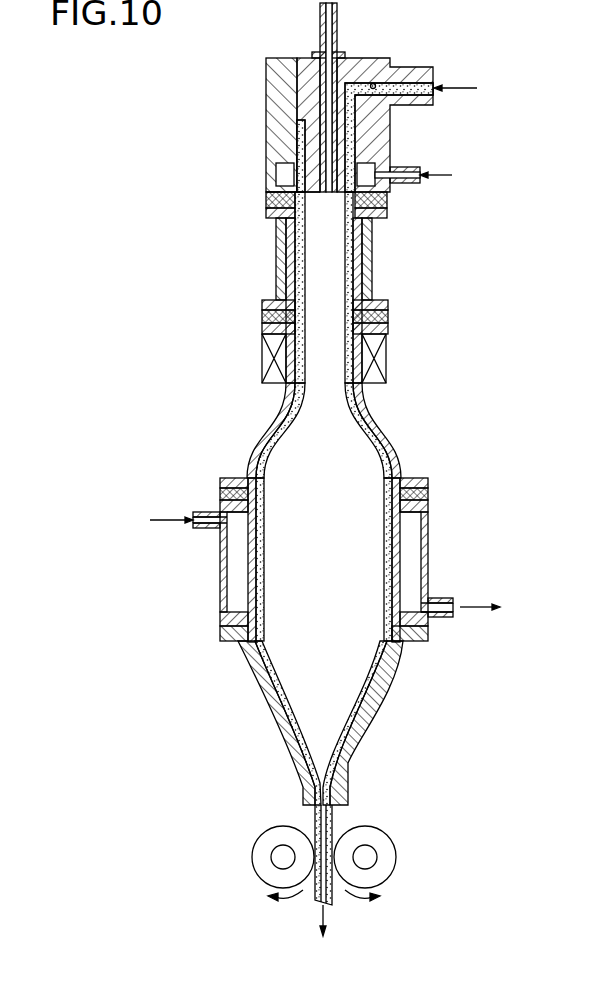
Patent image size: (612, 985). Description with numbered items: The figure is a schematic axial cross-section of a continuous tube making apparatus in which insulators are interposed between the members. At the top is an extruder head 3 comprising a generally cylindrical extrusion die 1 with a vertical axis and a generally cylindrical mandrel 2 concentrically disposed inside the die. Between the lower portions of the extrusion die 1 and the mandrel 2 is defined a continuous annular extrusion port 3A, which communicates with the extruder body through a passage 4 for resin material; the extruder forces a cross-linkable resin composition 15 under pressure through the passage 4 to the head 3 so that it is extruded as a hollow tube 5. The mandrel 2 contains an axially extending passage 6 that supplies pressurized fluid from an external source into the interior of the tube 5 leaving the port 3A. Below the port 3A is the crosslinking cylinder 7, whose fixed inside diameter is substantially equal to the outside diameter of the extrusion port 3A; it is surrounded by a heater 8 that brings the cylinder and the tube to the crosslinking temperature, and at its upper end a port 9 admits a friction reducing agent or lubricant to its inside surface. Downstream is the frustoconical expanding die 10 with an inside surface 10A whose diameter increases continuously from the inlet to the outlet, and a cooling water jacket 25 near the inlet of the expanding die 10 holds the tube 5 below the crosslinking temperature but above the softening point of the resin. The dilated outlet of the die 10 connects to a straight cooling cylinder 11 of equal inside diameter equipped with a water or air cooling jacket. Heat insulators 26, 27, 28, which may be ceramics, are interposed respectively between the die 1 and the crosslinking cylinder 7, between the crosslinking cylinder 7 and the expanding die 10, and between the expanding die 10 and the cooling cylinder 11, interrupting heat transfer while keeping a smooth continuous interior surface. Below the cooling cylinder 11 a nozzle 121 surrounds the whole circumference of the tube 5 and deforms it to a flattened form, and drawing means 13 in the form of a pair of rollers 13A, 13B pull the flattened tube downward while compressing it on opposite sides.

The extrusion die 1 is at (271, 92).
The mandrel 2 is at (347, 85).
The extruder head 3 is at (270, 125).
The extrusion port 3A is at (264, 190).
The passage 4 is at (373, 83).
The hollow tube 5 is at (350, 238).
The axially extending passage 6 is at (325, 155).
The crosslinking cylinder 7 is at (362, 262).
The heater 8 is at (368, 283).
The port 9 is at (392, 162).
The expanding die 10 is at (345, 512).
The inside surface 10A is at (371, 422).
The cooling cylinder 11 is at (332, 559).
The nozzle 121 is at (387, 702).
The drawing means 13 is at (329, 853).
The roller 13A is at (258, 858).
The roller 13B is at (396, 858).
The cross-linkable resin composition 15 is at (413, 75).
The cooling water jacket 25 is at (385, 356).
The heat insulator 26 is at (392, 203).
The heat insulator 27 is at (388, 317).
The heat insulator 28 is at (429, 488).